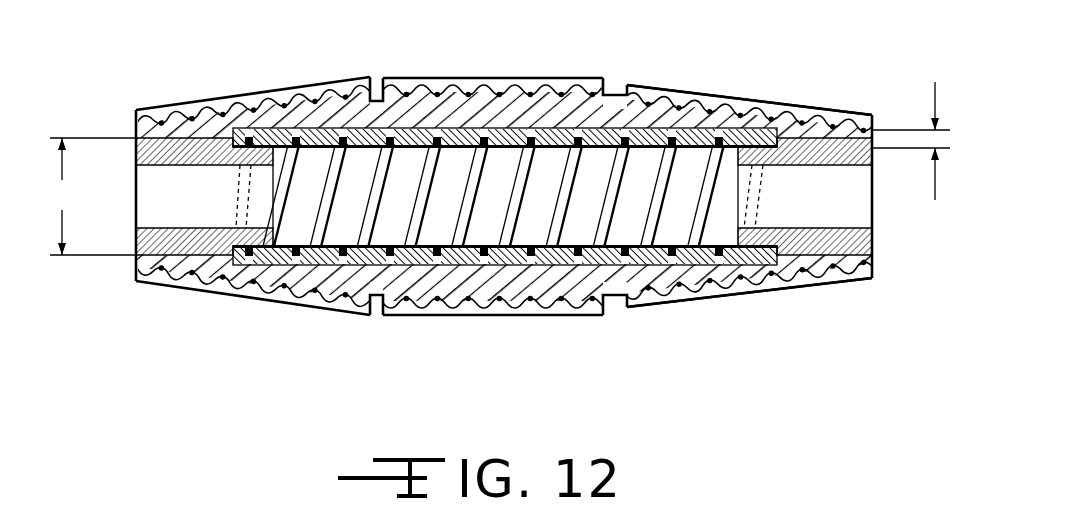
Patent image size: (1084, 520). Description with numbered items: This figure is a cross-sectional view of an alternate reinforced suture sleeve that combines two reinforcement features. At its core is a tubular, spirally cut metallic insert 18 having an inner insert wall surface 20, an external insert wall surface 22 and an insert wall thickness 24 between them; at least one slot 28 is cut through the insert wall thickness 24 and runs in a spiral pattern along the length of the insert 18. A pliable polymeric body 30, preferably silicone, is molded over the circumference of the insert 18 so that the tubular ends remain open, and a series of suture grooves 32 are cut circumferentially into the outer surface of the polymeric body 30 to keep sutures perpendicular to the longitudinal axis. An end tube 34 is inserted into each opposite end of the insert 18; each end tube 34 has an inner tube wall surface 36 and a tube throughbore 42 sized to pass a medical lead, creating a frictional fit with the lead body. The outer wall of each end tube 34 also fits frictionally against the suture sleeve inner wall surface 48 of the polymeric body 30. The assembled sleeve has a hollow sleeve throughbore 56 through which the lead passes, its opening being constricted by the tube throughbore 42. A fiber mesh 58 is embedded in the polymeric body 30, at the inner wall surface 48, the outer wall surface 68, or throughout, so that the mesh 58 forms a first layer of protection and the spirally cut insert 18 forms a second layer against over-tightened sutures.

The insert 18 is at (425, 265).
The inner insert wall surface 20 is at (577, 265).
The external insert wall surface 22 is at (480, 265).
The insert wall thickness 24 is at (912, 126).
The slot 28 is at (323, 222).
The polymeric body 30 is at (518, 110).
The suture grooves 32 is at (378, 78).
The end tube 34 is at (137, 242).
The inner tube wall surface 36 is at (158, 228).
The tube throughbore 42 is at (203, 228).
The suture sleeve inner wall surface 48 is at (630, 103).
The sleeve throughbore 56 is at (90, 196).
The fiber mesh 58 is at (730, 100).
The outer wall surface 68 is at (490, 78).